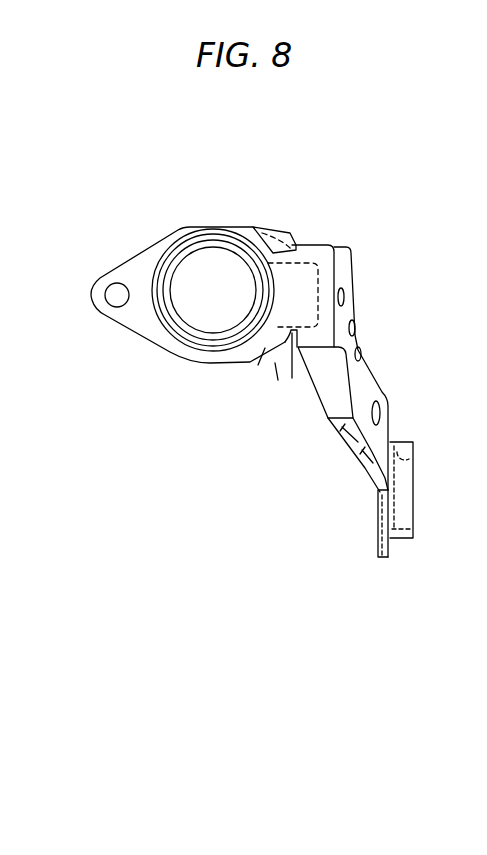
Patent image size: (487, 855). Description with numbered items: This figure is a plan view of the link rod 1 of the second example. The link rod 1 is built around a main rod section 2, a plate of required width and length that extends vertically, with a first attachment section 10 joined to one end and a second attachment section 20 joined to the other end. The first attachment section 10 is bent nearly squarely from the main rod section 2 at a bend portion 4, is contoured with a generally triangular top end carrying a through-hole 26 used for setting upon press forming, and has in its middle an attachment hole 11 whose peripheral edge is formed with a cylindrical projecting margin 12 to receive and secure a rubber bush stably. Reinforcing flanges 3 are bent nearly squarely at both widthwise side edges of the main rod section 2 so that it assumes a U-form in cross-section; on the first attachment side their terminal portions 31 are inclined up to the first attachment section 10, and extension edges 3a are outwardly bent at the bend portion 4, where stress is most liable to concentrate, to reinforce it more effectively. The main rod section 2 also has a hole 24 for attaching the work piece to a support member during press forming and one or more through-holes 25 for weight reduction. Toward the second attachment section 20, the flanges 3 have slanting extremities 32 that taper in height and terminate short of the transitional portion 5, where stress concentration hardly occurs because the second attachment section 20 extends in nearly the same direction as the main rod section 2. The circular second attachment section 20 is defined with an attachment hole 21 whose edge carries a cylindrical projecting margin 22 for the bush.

The link rod 1 is at (263, 155).
The first attachment section 10 is at (163, 236).
The through-hole 26 is at (117, 290).
The attachment hole 11 is at (207, 318).
The cylindrical projecting margin 12 is at (195, 322).
The extension edge 3a is at (273, 250).
The terminal portion 31 is at (300, 222).
The bend portion 4 is at (323, 277).
The main rod section 2 is at (366, 377).
The hole 24 is at (356, 325).
The through-hole 25 is at (361, 353).
The reinforcing flange 3 is at (340, 428).
The terminal portion 32 is at (362, 450).
The second attachment section 20 is at (378, 517).
The transitional portion 5 is at (398, 438).
The cylindrical projecting margin 22 is at (403, 503).
The attachment hole 21 is at (400, 453).